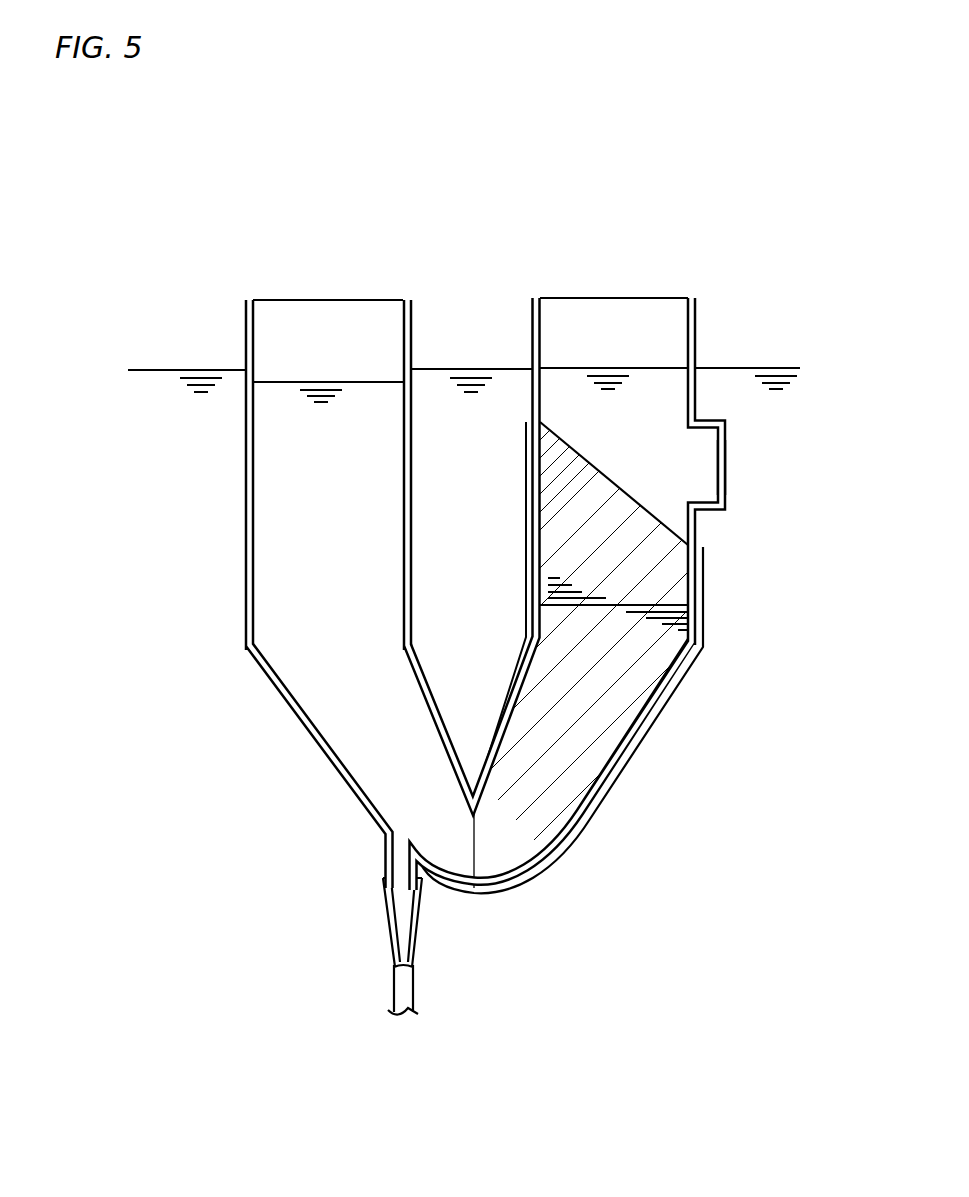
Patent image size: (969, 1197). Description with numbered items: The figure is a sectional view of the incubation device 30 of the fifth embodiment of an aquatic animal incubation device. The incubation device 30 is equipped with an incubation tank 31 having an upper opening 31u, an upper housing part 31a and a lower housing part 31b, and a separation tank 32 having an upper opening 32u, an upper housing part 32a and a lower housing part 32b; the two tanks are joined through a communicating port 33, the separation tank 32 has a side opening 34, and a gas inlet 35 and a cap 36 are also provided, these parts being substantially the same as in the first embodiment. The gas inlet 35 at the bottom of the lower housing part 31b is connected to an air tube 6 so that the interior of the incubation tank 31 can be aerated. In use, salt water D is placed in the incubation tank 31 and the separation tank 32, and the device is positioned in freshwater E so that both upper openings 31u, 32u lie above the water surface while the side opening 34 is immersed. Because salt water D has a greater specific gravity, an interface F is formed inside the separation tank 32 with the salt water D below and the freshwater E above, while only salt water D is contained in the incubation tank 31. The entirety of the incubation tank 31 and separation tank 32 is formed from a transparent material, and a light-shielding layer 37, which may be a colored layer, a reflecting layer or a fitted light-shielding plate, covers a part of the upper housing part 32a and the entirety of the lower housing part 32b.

The incubation device 30 is at (490, 190).
The incubation tank 31 is at (244, 357).
The upper opening 31u is at (410, 301).
The upper housing part 31a is at (246, 523).
The lower housing part 31b is at (310, 735).
The separation tank 32 is at (531, 341).
The upper opening 32u is at (667, 298).
The upper housing part 32a is at (526, 490).
The lower housing part 32b is at (630, 760).
The communicating port 33 is at (492, 884).
The side opening 34 is at (719, 490).
The gas inlet 35 is at (383, 861).
The cap 36 is at (704, 425).
The light-shielding layer 37 is at (598, 794).
The air tube 6 is at (395, 986).
The salt water D is at (335, 566).
The freshwater E is at (630, 446).
The interface F is at (690, 594).